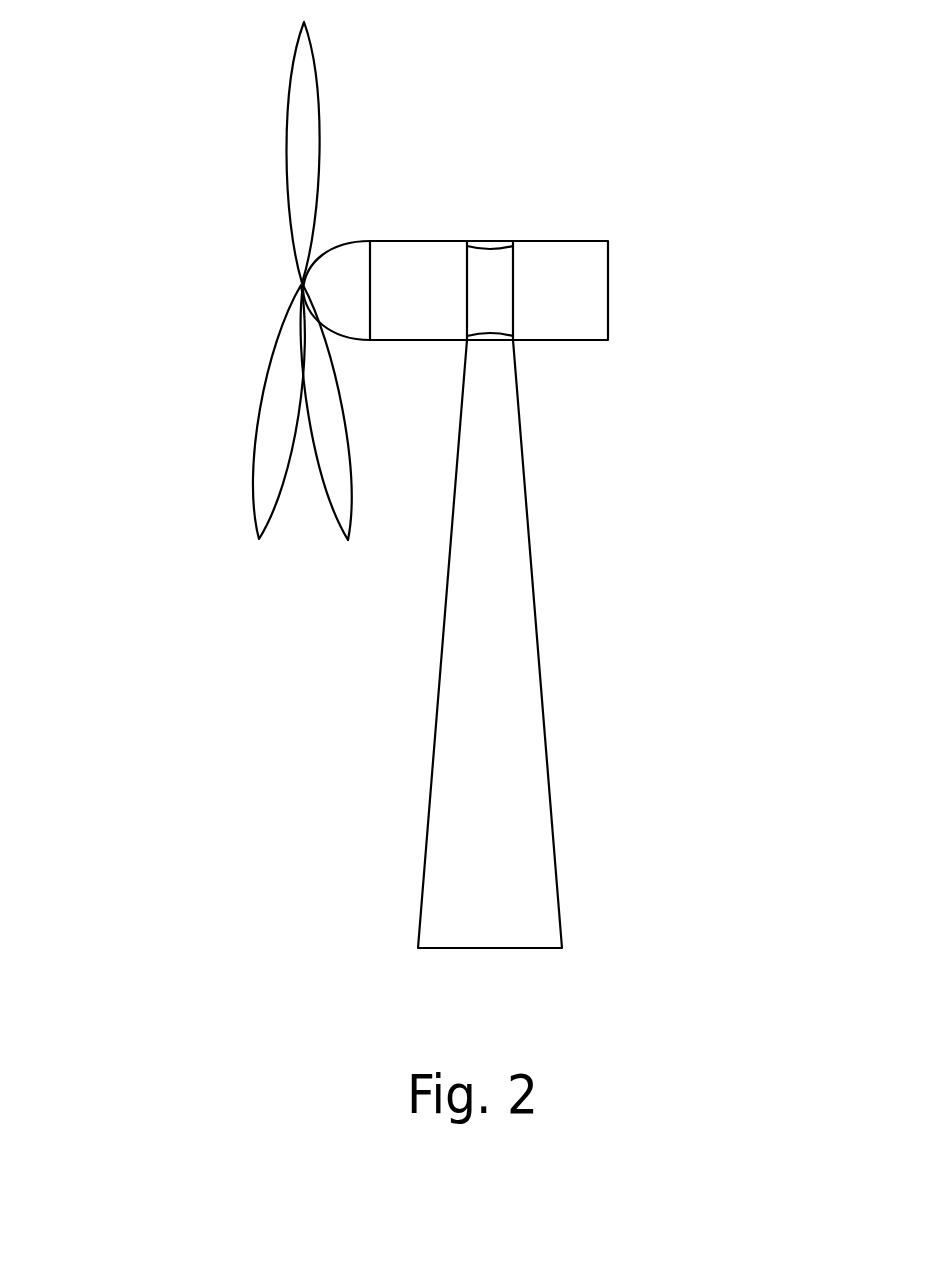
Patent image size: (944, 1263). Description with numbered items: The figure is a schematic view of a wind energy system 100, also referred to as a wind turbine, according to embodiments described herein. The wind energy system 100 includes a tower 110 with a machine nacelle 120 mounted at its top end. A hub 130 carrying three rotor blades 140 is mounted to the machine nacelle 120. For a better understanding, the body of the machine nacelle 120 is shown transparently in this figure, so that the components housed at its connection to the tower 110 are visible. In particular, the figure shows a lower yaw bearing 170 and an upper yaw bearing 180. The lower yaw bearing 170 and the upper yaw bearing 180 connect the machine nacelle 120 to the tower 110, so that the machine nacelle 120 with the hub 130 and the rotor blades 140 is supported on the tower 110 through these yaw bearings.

The wind energy system 100 is at (830, 87).
The tower 110 is at (540, 680).
The machine nacelle 120 is at (608, 275).
The hub 130 is at (338, 249).
The rotor blades 140 is at (290, 180).
The lower yaw bearing 170 is at (515, 336).
The upper yaw bearing 180 is at (517, 243).